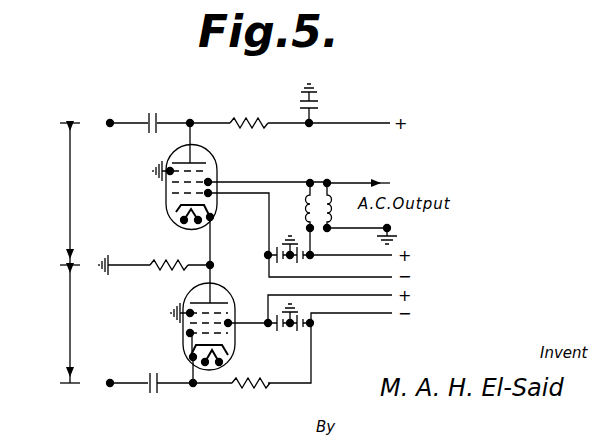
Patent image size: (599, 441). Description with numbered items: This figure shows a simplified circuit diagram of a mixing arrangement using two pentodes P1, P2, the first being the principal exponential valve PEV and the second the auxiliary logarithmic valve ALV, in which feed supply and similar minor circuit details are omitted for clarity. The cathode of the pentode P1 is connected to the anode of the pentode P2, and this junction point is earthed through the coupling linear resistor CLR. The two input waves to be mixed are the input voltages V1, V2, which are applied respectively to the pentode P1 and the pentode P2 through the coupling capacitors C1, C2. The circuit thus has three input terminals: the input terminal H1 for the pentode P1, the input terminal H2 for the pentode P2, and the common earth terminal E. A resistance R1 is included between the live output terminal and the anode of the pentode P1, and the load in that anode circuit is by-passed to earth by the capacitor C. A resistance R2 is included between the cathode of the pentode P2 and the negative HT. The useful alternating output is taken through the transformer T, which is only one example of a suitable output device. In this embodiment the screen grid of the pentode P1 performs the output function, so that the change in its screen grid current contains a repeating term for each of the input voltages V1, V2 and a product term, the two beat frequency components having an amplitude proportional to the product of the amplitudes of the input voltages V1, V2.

The input terminal H1 is at (87, 126).
The coupling capacitor C1 is at (151, 112).
The resistance R1 is at (249, 112).
The capacitor C is at (317, 103).
The input voltage V1 is at (64, 194).
The input voltage V2 is at (64, 324).
The pentode P1 is at (201, 187).
The principal exponential valve PEV is at (137, 173).
The transformer T is at (351, 209).
The common earth terminal E is at (84, 265).
The coupling linear resistor CLR is at (168, 253).
The pentode P2 is at (218, 333).
The auxiliary logarithmic valve ALV is at (152, 315).
The input terminal H2 is at (87, 386).
The coupling capacitor C2 is at (151, 396).
The resistance R2 is at (251, 394).